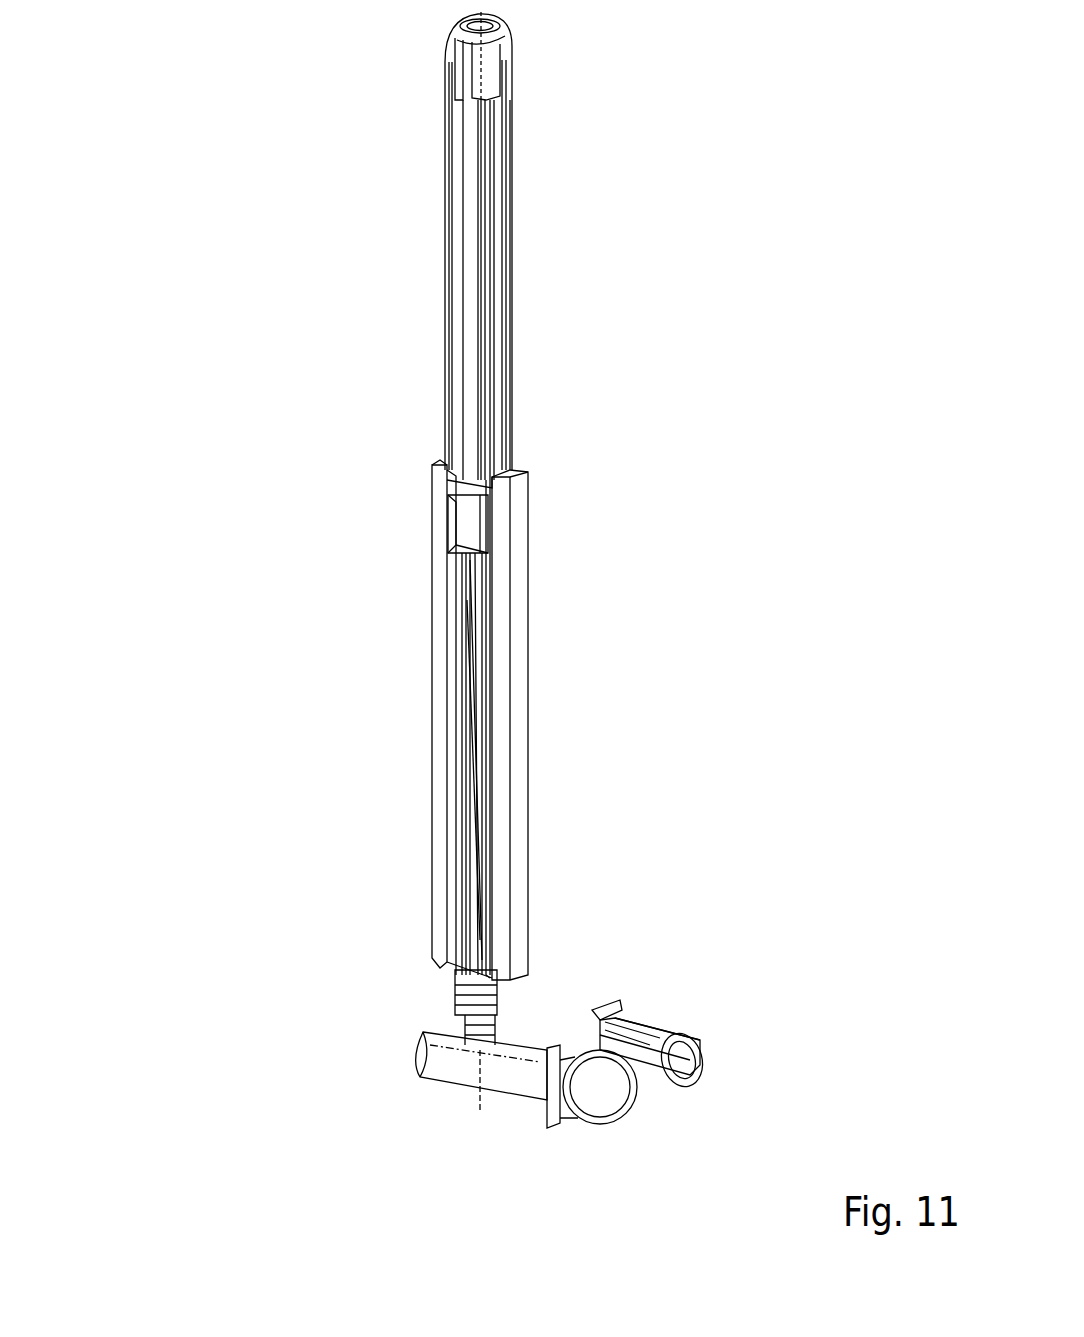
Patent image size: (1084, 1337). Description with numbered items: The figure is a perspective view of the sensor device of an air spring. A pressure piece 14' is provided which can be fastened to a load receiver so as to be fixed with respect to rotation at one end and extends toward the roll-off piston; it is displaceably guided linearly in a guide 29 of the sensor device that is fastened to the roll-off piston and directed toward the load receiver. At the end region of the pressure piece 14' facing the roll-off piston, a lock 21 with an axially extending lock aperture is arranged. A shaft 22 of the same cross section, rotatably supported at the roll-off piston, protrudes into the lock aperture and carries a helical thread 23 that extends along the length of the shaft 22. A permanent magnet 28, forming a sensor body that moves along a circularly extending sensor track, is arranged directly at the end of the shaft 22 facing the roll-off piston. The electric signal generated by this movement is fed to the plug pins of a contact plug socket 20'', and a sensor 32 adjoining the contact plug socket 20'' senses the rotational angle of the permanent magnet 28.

The pressure piece 14' is at (700, 245).
The guide 29 is at (518, 522).
The lock 21 is at (465, 528).
The shaft 22 is at (490, 637).
The helical thread 23 is at (477, 813).
The permanent magnet 28 is at (443, 1025).
The contact plug socket 20'' is at (776, 1033).
The sensor 32 is at (627, 1100).